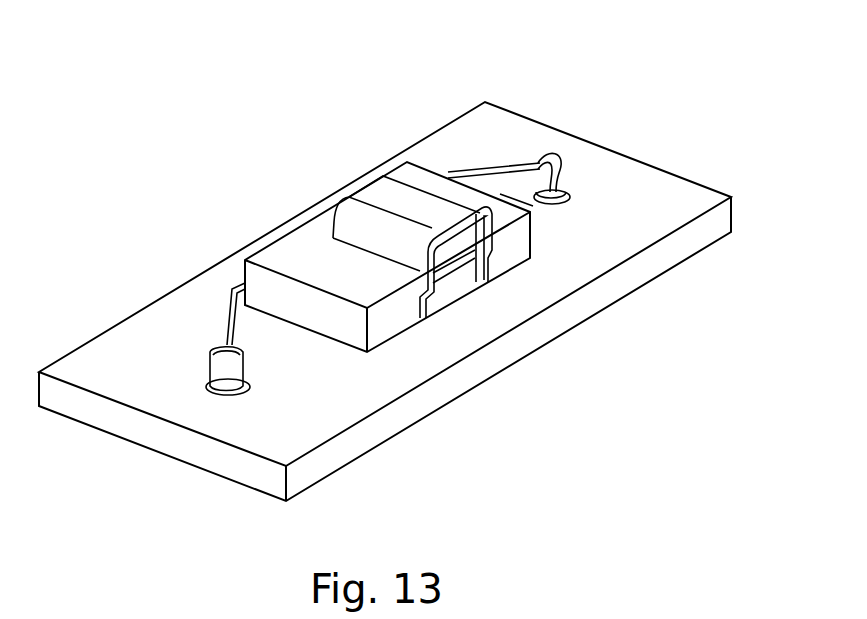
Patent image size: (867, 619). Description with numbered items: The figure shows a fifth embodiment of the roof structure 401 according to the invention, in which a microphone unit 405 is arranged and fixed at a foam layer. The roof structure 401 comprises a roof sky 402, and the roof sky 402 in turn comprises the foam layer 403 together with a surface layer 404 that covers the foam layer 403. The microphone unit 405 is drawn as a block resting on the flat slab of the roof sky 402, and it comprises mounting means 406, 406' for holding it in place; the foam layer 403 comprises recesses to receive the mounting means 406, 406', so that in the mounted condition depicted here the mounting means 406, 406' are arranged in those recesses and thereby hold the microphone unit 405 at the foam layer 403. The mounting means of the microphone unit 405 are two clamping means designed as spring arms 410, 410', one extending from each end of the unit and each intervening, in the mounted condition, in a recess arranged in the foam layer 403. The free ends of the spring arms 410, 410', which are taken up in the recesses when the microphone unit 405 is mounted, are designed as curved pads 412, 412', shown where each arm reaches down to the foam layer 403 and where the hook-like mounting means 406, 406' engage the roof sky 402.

The roof structure 401 is at (353, 104).
The roof sky 402 is at (682, 150).
The foam layer 403 is at (260, 433).
The surface layer 404 is at (386, 441).
The microphone unit 405 is at (343, 199).
The spring arm 410 is at (492, 182).
The spring arm 410' is at (165, 267).
The mounting means 406 is at (597, 132).
The mounting means 406' is at (148, 433).
The curved pad 412 is at (552, 197).
The curved pad 412' is at (316, 455).